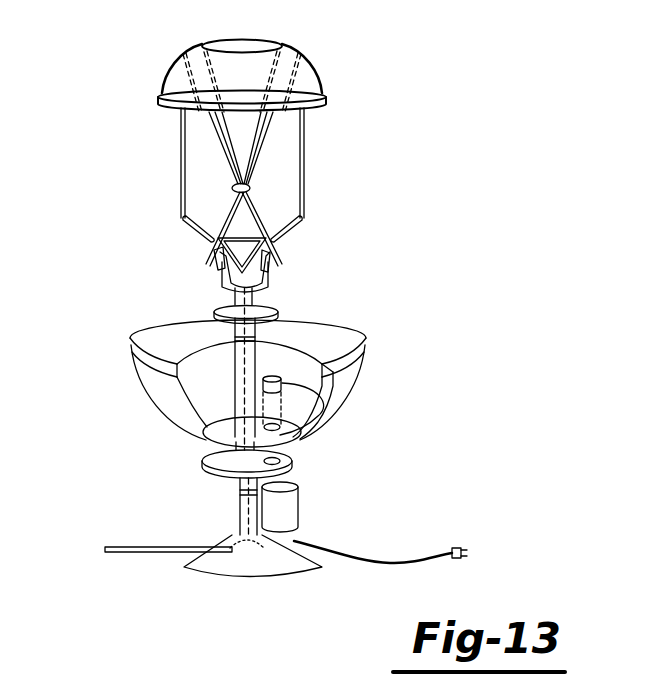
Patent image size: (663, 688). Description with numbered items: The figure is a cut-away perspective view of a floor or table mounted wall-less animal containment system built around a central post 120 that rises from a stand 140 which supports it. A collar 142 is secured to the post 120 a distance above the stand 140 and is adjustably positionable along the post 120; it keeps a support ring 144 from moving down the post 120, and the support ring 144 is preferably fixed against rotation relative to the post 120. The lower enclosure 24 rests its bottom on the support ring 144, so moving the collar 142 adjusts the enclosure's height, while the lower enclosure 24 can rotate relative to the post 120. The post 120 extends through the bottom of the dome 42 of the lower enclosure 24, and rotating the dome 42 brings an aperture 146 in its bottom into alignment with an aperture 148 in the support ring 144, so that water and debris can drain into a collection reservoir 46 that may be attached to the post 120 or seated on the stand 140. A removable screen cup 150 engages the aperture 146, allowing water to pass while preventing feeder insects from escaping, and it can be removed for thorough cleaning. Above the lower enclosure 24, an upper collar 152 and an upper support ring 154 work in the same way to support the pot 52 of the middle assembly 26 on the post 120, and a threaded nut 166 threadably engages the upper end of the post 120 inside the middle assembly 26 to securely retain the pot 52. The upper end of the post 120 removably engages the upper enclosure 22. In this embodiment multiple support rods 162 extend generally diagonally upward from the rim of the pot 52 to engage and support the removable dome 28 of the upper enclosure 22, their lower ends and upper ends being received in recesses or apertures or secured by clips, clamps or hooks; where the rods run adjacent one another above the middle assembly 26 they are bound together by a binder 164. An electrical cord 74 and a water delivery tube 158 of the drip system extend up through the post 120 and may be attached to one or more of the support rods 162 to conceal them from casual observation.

The upper enclosure 22 is at (158, 53).
The removable dome 28 is at (233, 44).
The support rods 162 is at (220, 154).
The binder 164 is at (250, 186).
The threaded nut 166 is at (273, 279).
The pot 52 is at (297, 237).
The middle assembly 26 is at (190, 240).
The cord 74 is at (284, 268).
The delivery tube 158 is at (230, 268).
The post 120 is at (230, 297).
The upper support ring 154 is at (279, 311).
The lower enclosure 24 is at (126, 393).
The upper collar 152 is at (375, 338).
The dome 42 is at (343, 379).
The screen cup 150 is at (315, 410).
The aperture 148 is at (290, 468).
The aperture 146 is at (295, 448).
The support ring 144 is at (212, 462).
The collar 142 is at (238, 501).
The collection reservoir 46 is at (288, 504).
The stand 140 is at (259, 574).